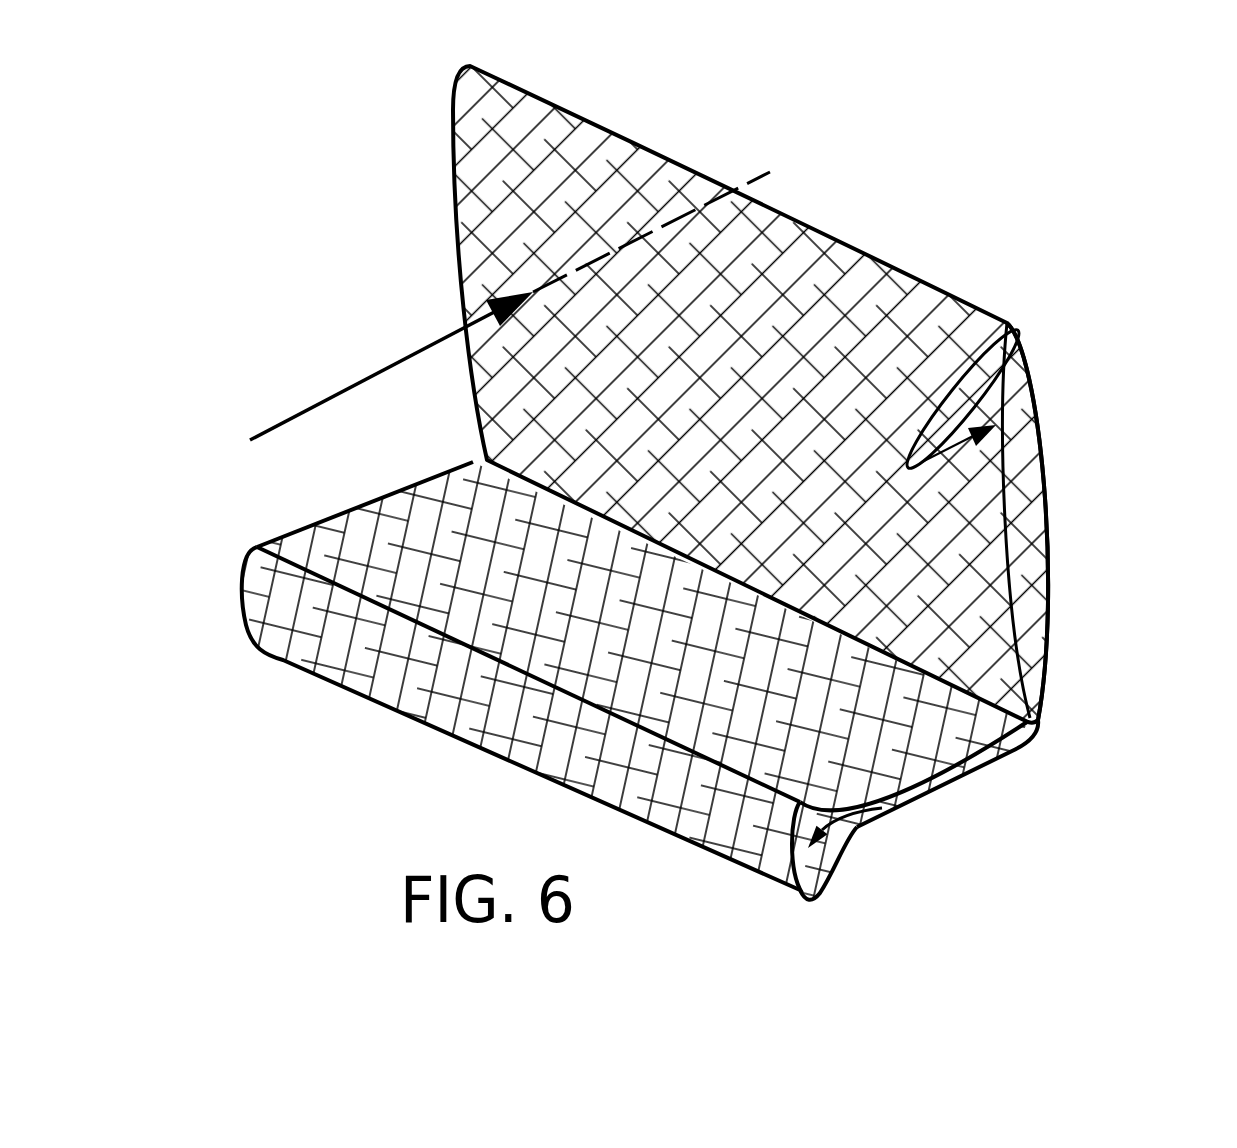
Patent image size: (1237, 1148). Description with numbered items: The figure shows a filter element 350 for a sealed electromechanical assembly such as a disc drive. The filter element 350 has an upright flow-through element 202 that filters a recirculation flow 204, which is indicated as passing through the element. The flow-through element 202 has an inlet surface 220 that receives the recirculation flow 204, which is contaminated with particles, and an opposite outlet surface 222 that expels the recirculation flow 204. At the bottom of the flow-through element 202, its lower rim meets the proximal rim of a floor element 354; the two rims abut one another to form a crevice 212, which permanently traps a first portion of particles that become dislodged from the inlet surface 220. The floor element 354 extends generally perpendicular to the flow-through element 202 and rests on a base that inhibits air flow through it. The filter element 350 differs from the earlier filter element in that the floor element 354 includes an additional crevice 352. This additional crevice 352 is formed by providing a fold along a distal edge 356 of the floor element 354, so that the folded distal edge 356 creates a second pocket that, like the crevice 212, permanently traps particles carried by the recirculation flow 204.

The filter element 350 is at (286, 263).
The flow-through element 202 is at (453, 228).
The recirculation flow 204 is at (362, 381).
The inlet surface 220 is at (1018, 332).
The outlet surface 222 is at (1072, 379).
The crevice 212 is at (1013, 750).
The floor element 354 is at (353, 510).
The distal edge 356 is at (432, 722).
The additional crevice 352 is at (907, 822).